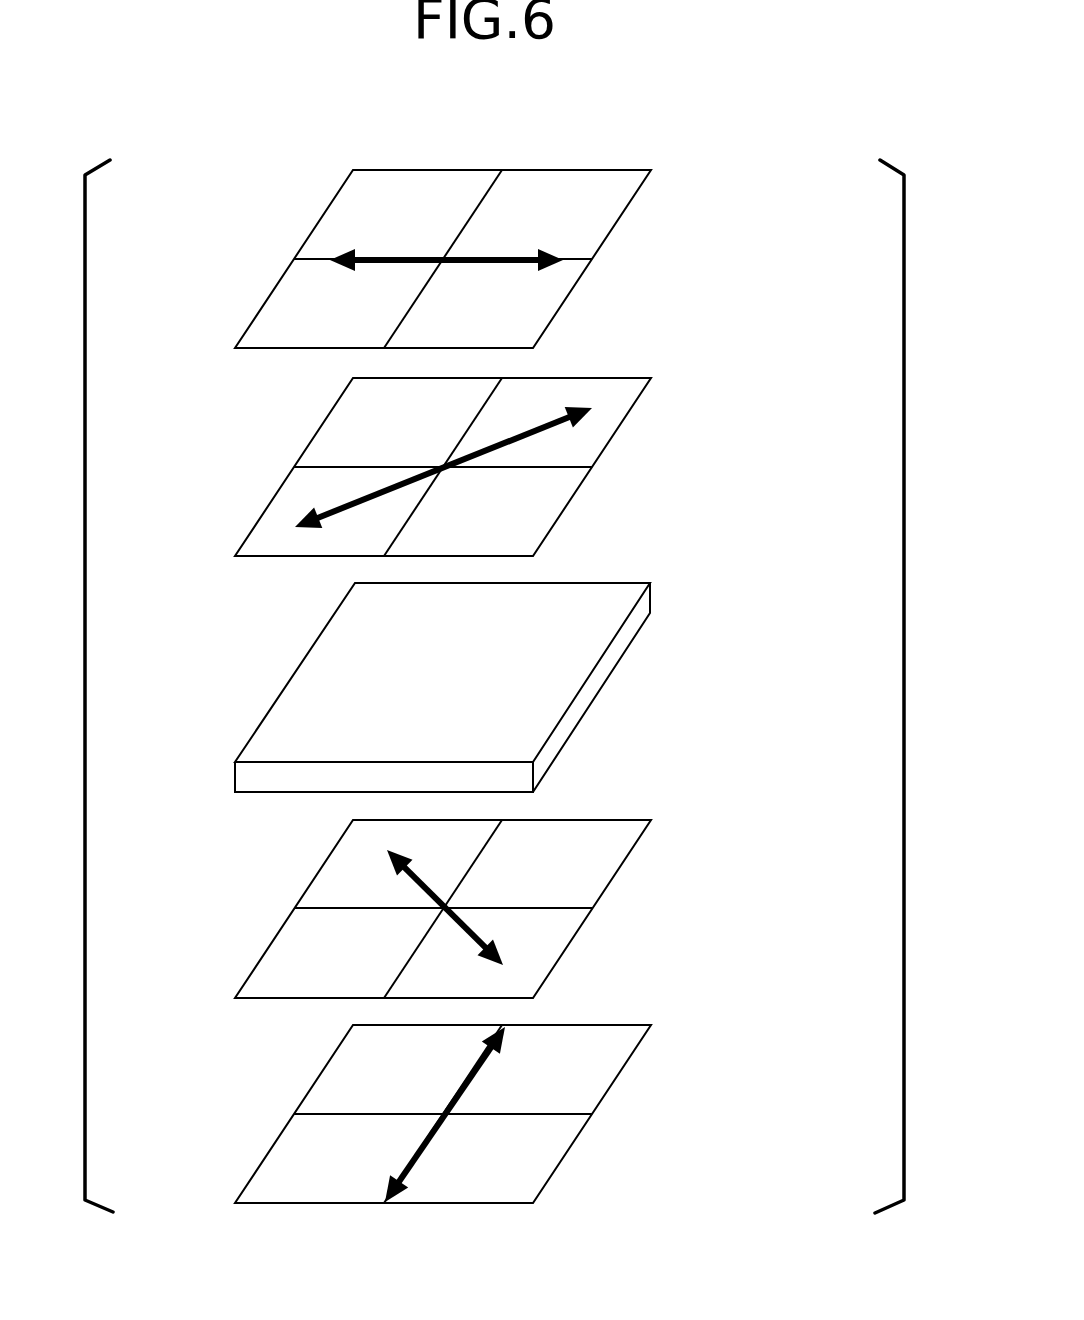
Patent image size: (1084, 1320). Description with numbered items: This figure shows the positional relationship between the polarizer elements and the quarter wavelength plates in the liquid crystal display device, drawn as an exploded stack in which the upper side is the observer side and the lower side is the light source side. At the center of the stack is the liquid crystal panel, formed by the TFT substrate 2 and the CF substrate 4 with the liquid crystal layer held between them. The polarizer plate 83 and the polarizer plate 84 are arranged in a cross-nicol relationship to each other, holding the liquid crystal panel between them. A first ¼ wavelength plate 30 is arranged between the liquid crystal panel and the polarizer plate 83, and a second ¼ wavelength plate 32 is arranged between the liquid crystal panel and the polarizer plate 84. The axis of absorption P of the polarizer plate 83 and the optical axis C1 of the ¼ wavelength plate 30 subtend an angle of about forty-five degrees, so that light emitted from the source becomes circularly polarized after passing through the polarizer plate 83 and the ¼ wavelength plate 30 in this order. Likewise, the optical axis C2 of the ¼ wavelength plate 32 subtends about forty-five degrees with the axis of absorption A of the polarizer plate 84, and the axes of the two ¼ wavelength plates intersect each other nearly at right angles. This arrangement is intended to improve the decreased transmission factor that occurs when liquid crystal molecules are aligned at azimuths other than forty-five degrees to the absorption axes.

The polarizer plate 84 is at (625, 205).
The second ¼ wavelength plate 32 is at (622, 418).
The CF substrate 4 is at (632, 588).
The TFT substrate 2 is at (628, 640).
The first ¼ wavelength plate 30 is at (622, 863).
The polarizer plate 83 is at (622, 1072).
The axis of absorption A is at (333, 258).
The optical axis C2 is at (313, 513).
The optical axis C1 is at (393, 868).
The axis of absorption P is at (418, 1147).